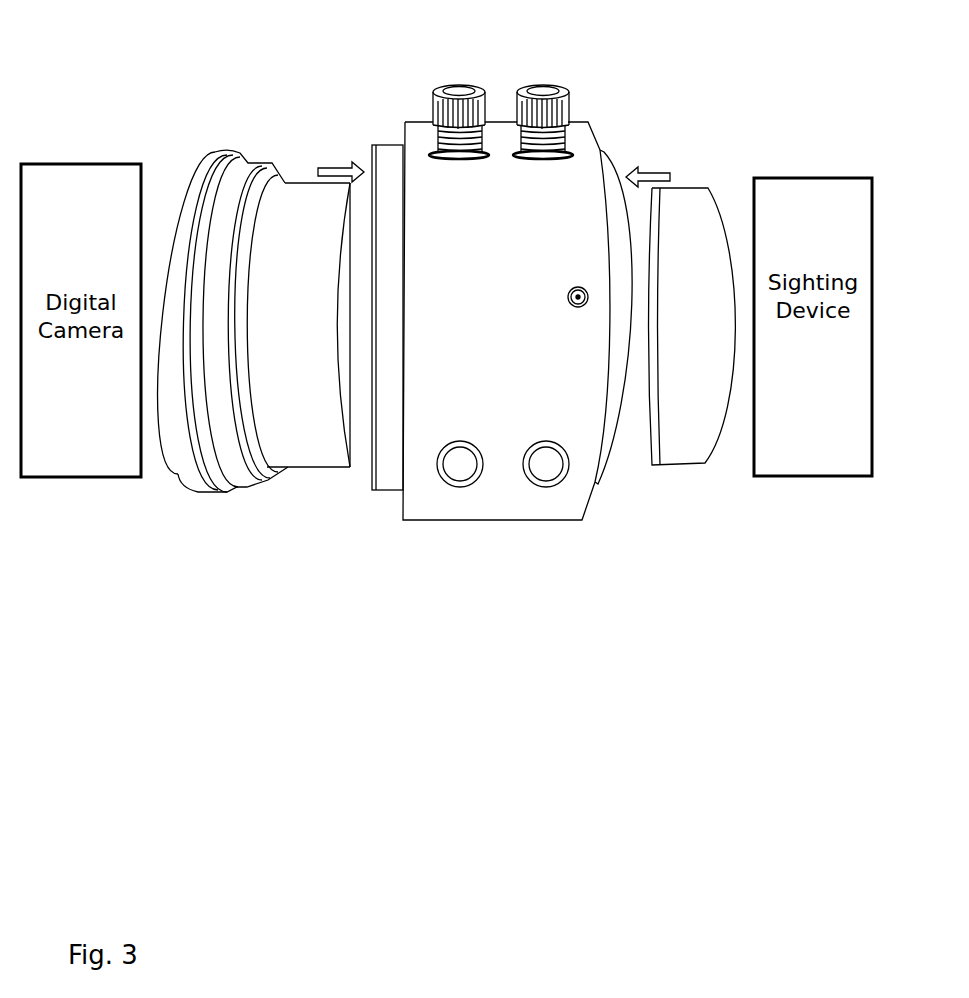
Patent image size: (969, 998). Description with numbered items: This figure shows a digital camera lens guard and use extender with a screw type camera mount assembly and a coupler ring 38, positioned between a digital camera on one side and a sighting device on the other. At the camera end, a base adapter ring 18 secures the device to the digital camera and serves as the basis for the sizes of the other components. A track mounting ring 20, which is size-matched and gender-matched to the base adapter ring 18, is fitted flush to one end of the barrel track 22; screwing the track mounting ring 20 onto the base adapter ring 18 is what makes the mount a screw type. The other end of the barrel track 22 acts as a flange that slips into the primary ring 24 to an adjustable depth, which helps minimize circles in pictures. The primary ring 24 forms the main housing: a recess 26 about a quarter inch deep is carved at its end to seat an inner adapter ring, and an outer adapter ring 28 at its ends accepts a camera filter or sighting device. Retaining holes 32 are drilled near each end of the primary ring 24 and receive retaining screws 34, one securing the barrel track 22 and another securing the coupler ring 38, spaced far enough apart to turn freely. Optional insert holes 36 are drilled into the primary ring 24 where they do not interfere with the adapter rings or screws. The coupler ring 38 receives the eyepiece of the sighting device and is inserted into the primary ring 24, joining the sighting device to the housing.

The base adapter ring 18 is at (181, 458).
The track mounting ring 20 is at (244, 183).
The barrel track 22 is at (295, 453).
The primary ring 24 is at (579, 461).
The recess 26 is at (402, 480).
The outer adapter ring 28 is at (382, 468).
The retaining holes 32 is at (437, 152).
The retaining screws 34 is at (538, 83).
The insert holes 36 is at (581, 288).
The coupler ring 38 is at (693, 247).